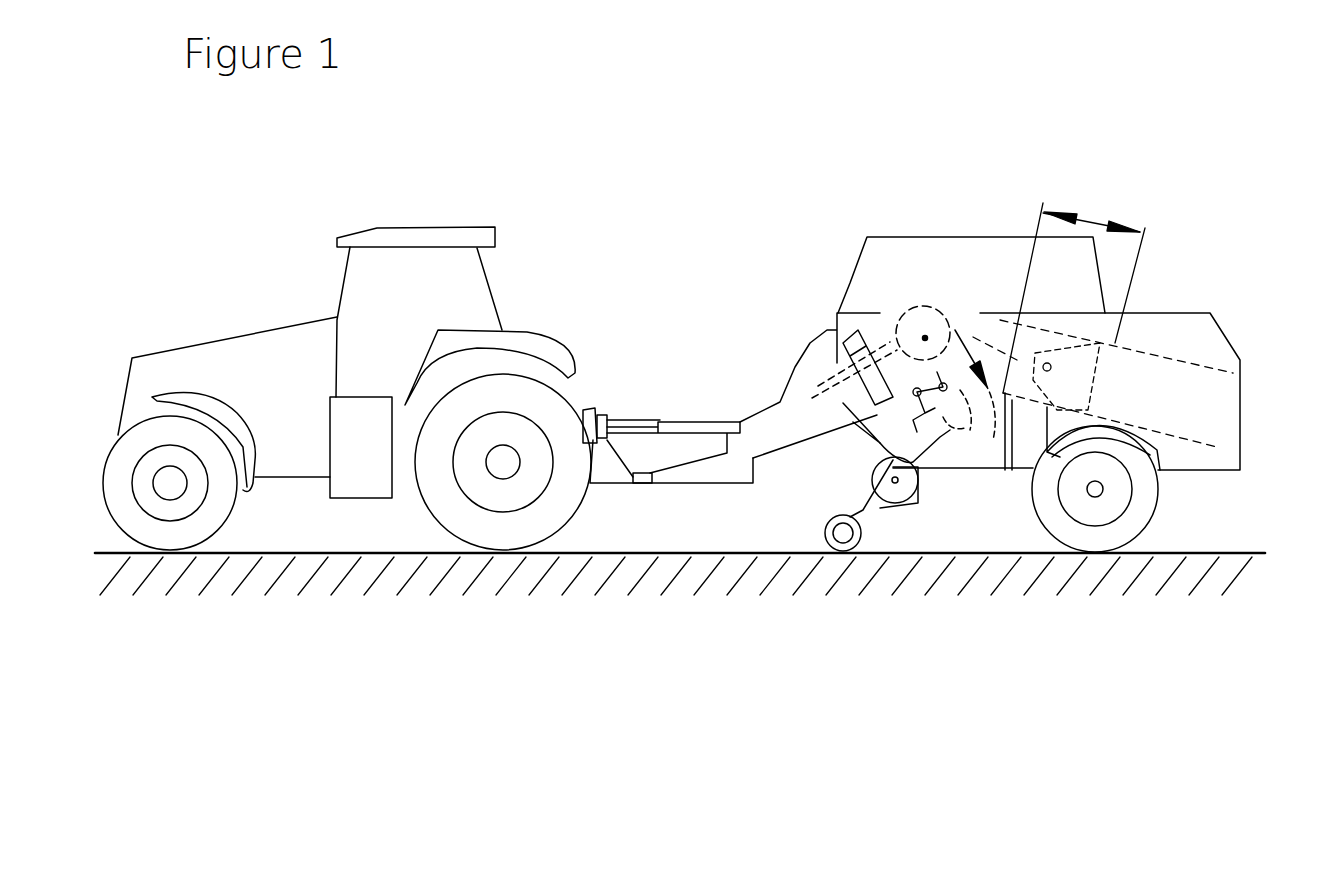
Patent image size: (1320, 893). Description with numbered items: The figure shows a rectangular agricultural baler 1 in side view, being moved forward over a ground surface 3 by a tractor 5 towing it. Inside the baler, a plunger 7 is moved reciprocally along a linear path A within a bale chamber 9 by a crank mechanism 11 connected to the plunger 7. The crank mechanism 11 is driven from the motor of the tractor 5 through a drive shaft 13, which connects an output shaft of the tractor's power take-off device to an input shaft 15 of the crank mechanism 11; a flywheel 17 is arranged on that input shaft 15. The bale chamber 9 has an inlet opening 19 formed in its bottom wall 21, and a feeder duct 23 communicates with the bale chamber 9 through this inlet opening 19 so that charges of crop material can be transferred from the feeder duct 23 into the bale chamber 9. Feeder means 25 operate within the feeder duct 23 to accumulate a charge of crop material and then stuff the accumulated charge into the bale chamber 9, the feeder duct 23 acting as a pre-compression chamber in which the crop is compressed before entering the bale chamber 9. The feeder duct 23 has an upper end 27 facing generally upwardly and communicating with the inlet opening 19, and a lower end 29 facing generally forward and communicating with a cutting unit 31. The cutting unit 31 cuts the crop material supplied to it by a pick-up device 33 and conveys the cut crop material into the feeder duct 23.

The rectangular agricultural baler 1 is at (1033, 162).
The ground surface 3 is at (1183, 553).
The tractor 5 is at (249, 352).
The plunger 7 is at (1080, 383).
The bale chamber 9 is at (1203, 403).
The crank mechanism 11 is at (950, 240).
The drive shaft 13 is at (680, 420).
The input shaft 15 is at (890, 353).
The flywheel 17 is at (837, 362).
The inlet opening 19 is at (1013, 347).
The bottom wall 21 is at (1150, 443).
The feeder duct 23 is at (947, 483).
The feeder means 25 is at (877, 450).
The upper end 27 is at (940, 337).
The lower end 29 is at (925, 490).
The cutting unit 31 is at (875, 536).
The pick-up device 33 is at (857, 510).
The linear path A is at (1092, 223).